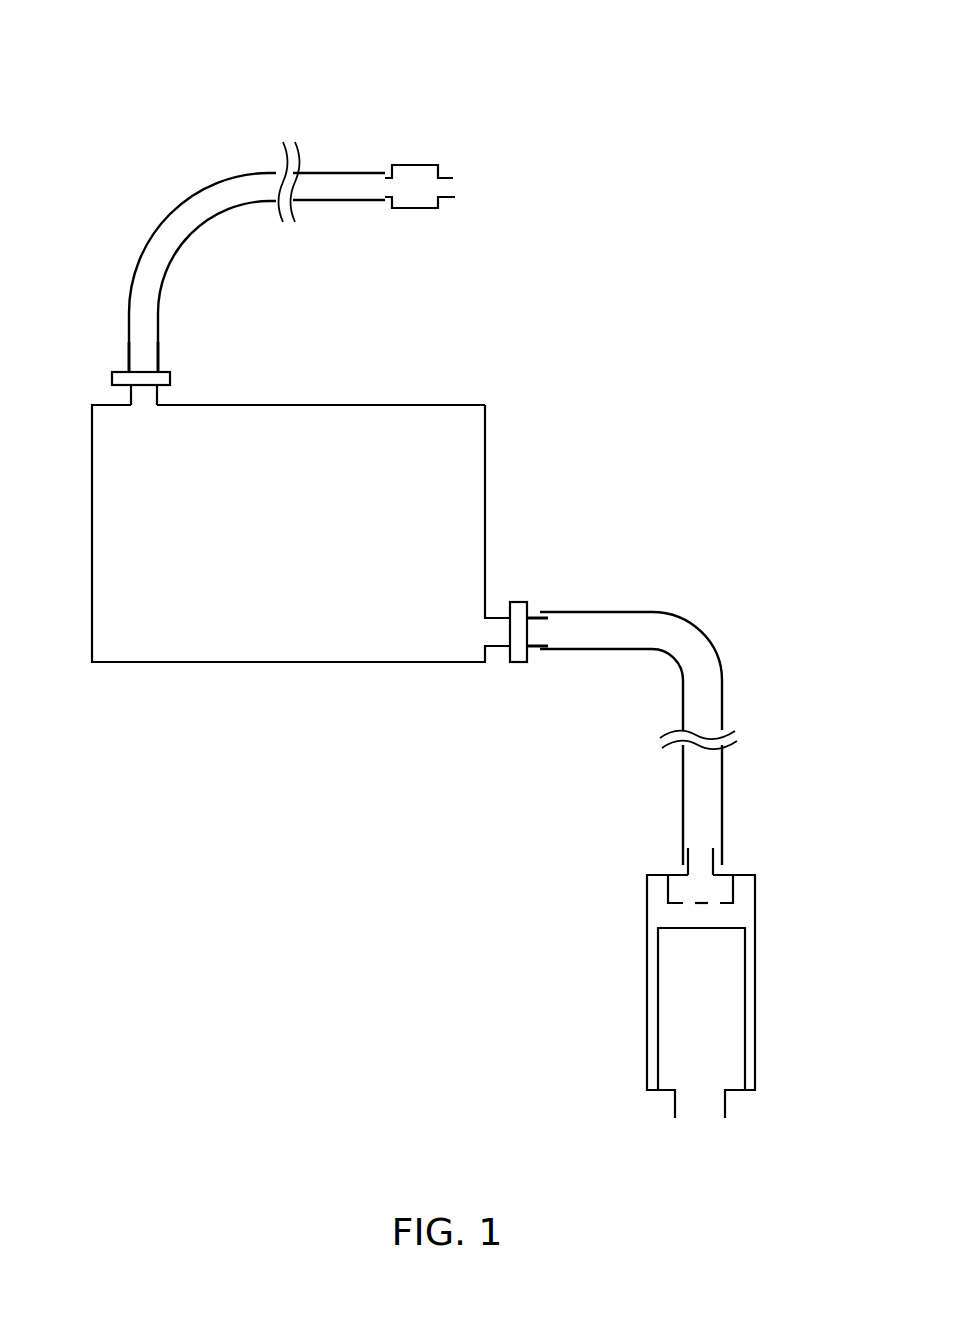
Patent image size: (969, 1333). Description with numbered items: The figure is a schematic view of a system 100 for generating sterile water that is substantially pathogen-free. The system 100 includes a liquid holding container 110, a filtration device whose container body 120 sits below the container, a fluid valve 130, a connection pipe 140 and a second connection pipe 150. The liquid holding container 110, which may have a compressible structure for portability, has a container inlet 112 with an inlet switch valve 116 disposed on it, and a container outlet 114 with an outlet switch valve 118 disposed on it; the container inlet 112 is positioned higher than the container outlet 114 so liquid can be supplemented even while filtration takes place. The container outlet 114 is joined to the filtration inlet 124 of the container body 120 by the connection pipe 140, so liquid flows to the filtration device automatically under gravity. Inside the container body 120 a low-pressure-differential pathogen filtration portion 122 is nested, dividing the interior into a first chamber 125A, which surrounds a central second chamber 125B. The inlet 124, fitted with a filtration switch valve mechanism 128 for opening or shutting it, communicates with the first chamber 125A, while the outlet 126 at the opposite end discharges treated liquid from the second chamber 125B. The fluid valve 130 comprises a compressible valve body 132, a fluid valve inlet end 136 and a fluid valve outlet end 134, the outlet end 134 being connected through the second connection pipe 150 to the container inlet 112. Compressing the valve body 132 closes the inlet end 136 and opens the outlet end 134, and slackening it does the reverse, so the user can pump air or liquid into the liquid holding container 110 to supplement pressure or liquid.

The system for generating sterile water 100 is at (63, 36).
The liquid holding container 110 is at (485, 443).
The container inlet 112 is at (160, 363).
The container outlet 114 is at (532, 612).
The inlet switch valve 116 is at (170, 378).
The outlet switch valve 118 is at (518, 664).
The filtration device container body 120 is at (693, 961).
The low-pressure-differential pathogen filtration portion 122 is at (658, 1030).
The filtration inlet 124 is at (717, 868).
The first chamber 125A is at (740, 908).
The second chamber 125B is at (723, 1025).
The outlet 126 is at (670, 1108).
The filtration switch valve mechanism 128 is at (703, 905).
The fluid valve 130 is at (498, 170).
The compressible valve body 132 is at (430, 165).
The fluid valve outlet end 134 is at (389, 170).
The fluid valve inlet end 136 is at (445, 203).
The connection pipe 140 is at (676, 618).
The second connection pipe 150 is at (222, 220).